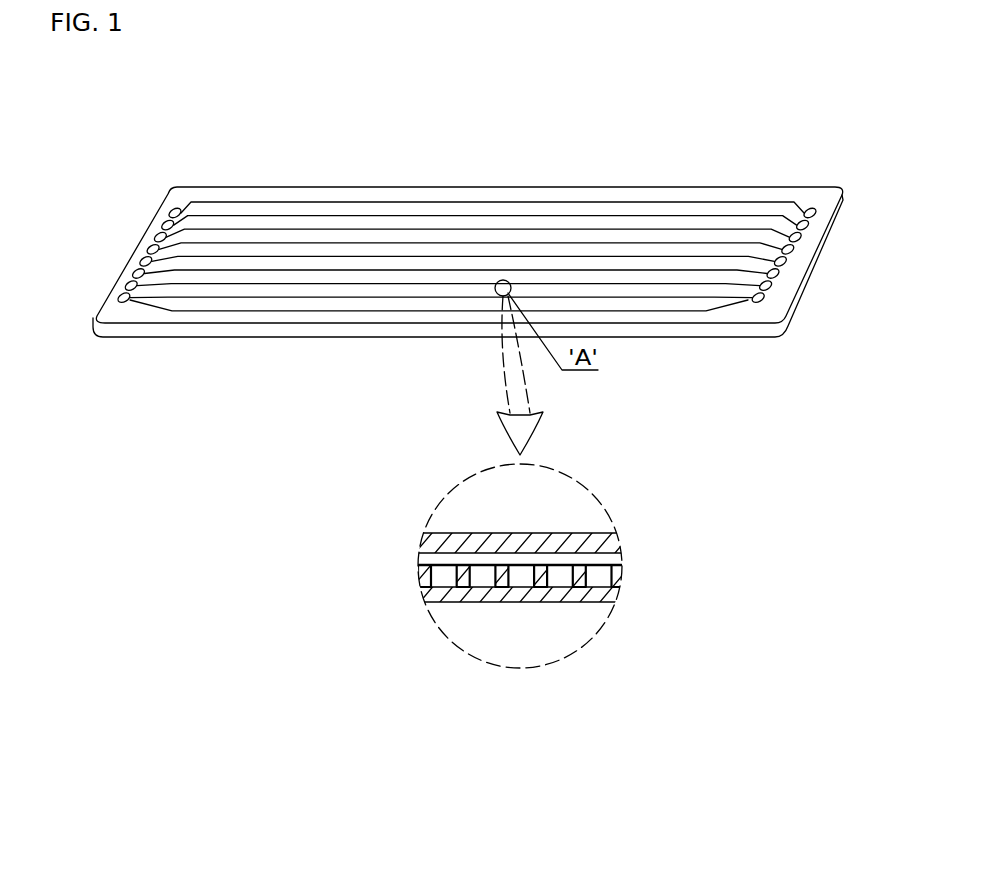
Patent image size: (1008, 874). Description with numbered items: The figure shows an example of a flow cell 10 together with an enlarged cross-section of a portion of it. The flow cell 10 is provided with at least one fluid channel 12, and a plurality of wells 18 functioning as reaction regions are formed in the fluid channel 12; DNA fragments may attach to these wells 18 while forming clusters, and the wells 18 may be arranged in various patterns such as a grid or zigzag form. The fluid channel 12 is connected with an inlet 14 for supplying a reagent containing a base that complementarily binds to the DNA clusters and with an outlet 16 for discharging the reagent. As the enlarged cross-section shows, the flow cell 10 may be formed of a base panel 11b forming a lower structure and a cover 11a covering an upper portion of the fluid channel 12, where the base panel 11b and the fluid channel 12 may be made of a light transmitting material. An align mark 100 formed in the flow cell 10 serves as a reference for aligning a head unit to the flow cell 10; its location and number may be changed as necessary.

The flow cell 10 is at (464, 334).
The align mark 100 is at (403, 200).
The cover 11a is at (484, 535).
The base panel 11b is at (432, 592).
The fluid channel 12 is at (370, 286).
The inlet 14 is at (123, 298).
The outlet 16 is at (766, 297).
The well 18 is at (478, 582).